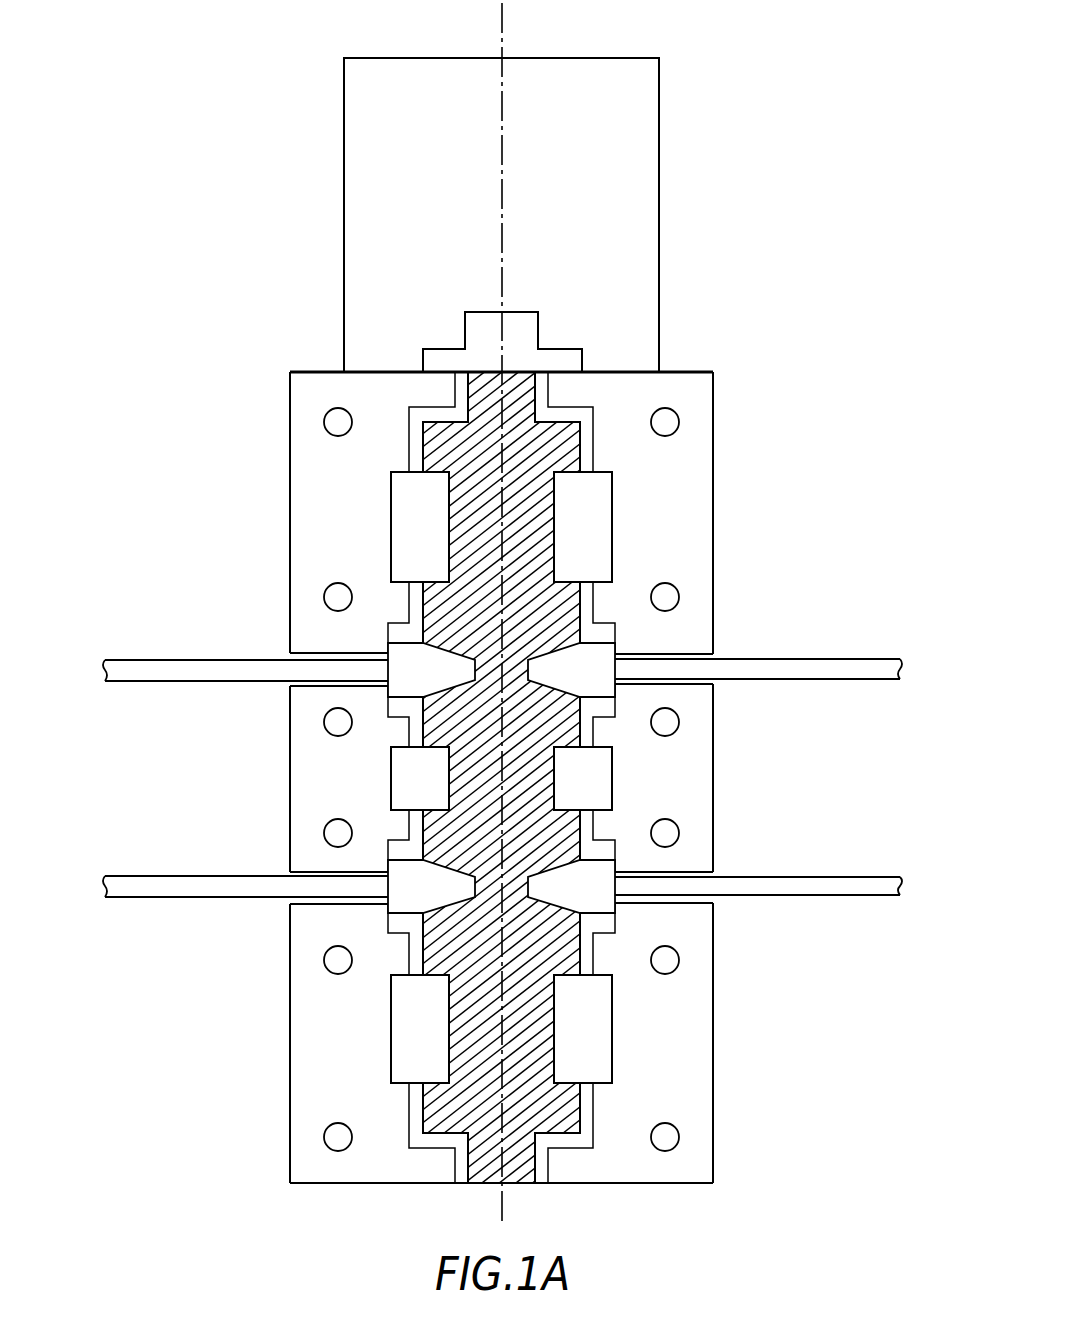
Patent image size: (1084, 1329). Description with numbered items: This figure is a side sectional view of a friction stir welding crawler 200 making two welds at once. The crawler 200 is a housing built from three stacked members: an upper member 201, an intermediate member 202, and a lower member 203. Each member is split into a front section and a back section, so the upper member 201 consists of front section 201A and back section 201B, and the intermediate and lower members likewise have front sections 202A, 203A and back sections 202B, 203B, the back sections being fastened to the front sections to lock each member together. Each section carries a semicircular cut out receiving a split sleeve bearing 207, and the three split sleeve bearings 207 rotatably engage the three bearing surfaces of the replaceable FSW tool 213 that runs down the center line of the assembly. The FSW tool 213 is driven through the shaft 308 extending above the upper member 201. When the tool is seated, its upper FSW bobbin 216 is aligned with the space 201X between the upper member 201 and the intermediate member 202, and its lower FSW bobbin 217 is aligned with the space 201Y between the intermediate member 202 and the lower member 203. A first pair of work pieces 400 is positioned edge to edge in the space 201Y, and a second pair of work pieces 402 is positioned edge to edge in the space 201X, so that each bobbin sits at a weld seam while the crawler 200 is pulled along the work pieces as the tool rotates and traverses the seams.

The crawler 200 is at (794, 312).
The upper member 201 is at (735, 500).
The front section 201A is at (300, 397).
The back section 201B is at (702, 388).
The space 201X is at (289, 652).
The space 201Y is at (289, 870).
The intermediate member 202 is at (733, 798).
The front section 202A is at (298, 718).
The back section 202B is at (706, 740).
The lower member 203 is at (741, 1058).
The front section 203A is at (299, 1095).
The back section 203B is at (703, 1163).
The split sleeve bearing 207 is at (393, 512).
The FSW tool 213 is at (423, 1133).
The upper FSW bobbin 216 is at (535, 645).
The lower FSW bobbin 217 is at (423, 940).
The actuator shaft 308 is at (660, 183).
The first pair of work pieces 400 is at (175, 896).
The second pair of work pieces 402 is at (138, 658).